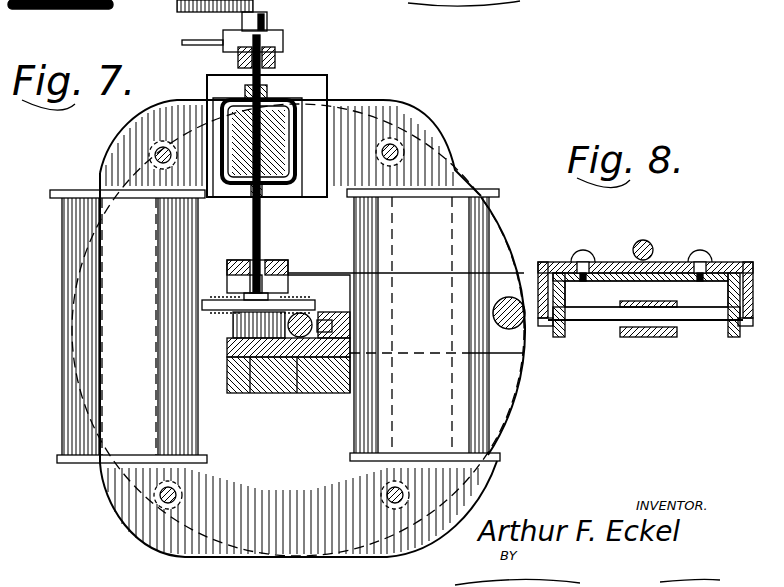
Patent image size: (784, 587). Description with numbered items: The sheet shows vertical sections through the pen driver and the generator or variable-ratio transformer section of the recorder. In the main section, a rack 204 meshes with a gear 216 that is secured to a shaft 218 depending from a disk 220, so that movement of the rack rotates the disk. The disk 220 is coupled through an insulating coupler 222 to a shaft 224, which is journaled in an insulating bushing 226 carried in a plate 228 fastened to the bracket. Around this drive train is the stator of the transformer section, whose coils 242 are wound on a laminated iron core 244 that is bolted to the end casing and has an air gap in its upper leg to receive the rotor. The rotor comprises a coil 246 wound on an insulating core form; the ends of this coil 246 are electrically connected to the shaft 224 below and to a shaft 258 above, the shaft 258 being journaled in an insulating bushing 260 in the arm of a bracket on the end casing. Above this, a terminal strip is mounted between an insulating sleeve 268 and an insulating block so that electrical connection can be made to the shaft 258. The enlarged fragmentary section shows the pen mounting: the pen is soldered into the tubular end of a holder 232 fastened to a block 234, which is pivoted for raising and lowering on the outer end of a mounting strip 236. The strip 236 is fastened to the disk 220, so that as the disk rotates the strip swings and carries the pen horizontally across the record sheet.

In FIG. 7, the rack 204 is at (292, 393).
In FIG. 7, the gear 216 is at (253, 393).
In FIG. 7, the shaft 218 is at (278, 393).
In FIG. 7, the disk 220 is at (212, 310).
In FIG. 7, the insulating coupler 222 is at (275, 300).
In FIG. 7, the shaft 224 is at (267, 212).
In FIG. 7, the insulating bushing 226 is at (254, 222).
In FIG. 7, the plate 228 is at (243, 226).
In FIG. 8, the holder 232 is at (652, 243).
In FIG. 8, the block 234 is at (563, 338).
In FIG. 8, the mounting strip 236 is at (645, 338).
In FIG. 7, the coils 242 is at (70, 437).
In FIG. 7, the laminated iron core 244 is at (377, 110).
In FIG. 7, the coil 246 is at (285, 105).
In FIG. 7, the shaft 258 is at (262, 80).
In FIG. 7, the insulating bushing 260 is at (270, 44).
In FIG. 7, the insulating sleeve 268 is at (263, 20).